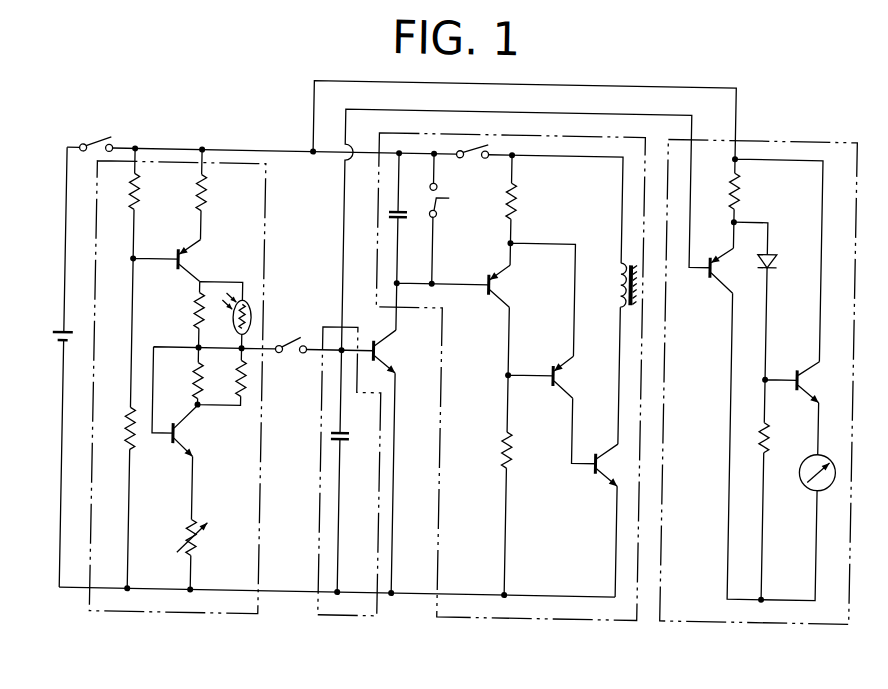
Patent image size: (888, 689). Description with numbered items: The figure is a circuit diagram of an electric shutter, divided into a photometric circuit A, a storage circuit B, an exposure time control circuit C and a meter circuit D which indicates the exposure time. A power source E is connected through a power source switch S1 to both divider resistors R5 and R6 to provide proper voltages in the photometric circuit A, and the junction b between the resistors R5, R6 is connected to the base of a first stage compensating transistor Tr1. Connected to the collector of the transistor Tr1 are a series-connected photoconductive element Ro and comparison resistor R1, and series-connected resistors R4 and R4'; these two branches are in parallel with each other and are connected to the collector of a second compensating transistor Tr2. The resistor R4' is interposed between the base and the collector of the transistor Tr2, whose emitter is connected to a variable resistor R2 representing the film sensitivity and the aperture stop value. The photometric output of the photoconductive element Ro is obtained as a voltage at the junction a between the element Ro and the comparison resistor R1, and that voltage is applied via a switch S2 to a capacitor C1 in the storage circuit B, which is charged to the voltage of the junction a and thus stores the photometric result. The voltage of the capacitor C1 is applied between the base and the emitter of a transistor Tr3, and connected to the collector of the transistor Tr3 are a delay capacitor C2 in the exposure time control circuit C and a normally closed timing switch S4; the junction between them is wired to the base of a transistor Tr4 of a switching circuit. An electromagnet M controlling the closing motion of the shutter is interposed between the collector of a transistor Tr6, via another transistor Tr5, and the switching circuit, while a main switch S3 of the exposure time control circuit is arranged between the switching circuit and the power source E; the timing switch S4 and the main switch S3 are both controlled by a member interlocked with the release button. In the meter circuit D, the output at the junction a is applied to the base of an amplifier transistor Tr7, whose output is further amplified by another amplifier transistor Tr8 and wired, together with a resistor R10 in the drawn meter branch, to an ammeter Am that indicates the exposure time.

The power source switch S1 is at (92, 127).
The power source E is at (51, 313).
The divider resistor R5 is at (146, 194).
The junction b is at (131, 264).
The first stage compensating transistor Tr1 is at (198, 260).
The resistor R4 is at (182, 310).
The photoconductive element Ro is at (227, 327).
The junction a is at (238, 357).
The resistor R4' is at (181, 383).
The comparison resistor R1 is at (236, 386).
The second compensating transistor Tr2 is at (178, 439).
The divider resistor R6 is at (131, 445).
The variable resistor R2 is at (202, 546).
The switch S2 is at (298, 345).
The capacitor C1 is at (348, 439).
The transistor Tr3 is at (381, 352).
The delay capacitor C2 is at (404, 215).
The timing switch S4 is at (439, 213).
The main switch S3 is at (474, 160).
The transistor Tr4 is at (495, 286).
The electromagnet M is at (616, 291).
The transistor Tr5 is at (557, 374).
The transistor Tr6 is at (595, 470).
The amplifier transistor Tr7 is at (705, 271).
The amplifier transistor Tr8 is at (801, 375).
The resistor R10 is at (766, 419).
The ammeter Am is at (803, 474).
The photometric circuit A is at (191, 618).
The storage circuit B is at (370, 622).
The exposure time control circuit C is at (563, 621).
The meter circuit D is at (786, 619).